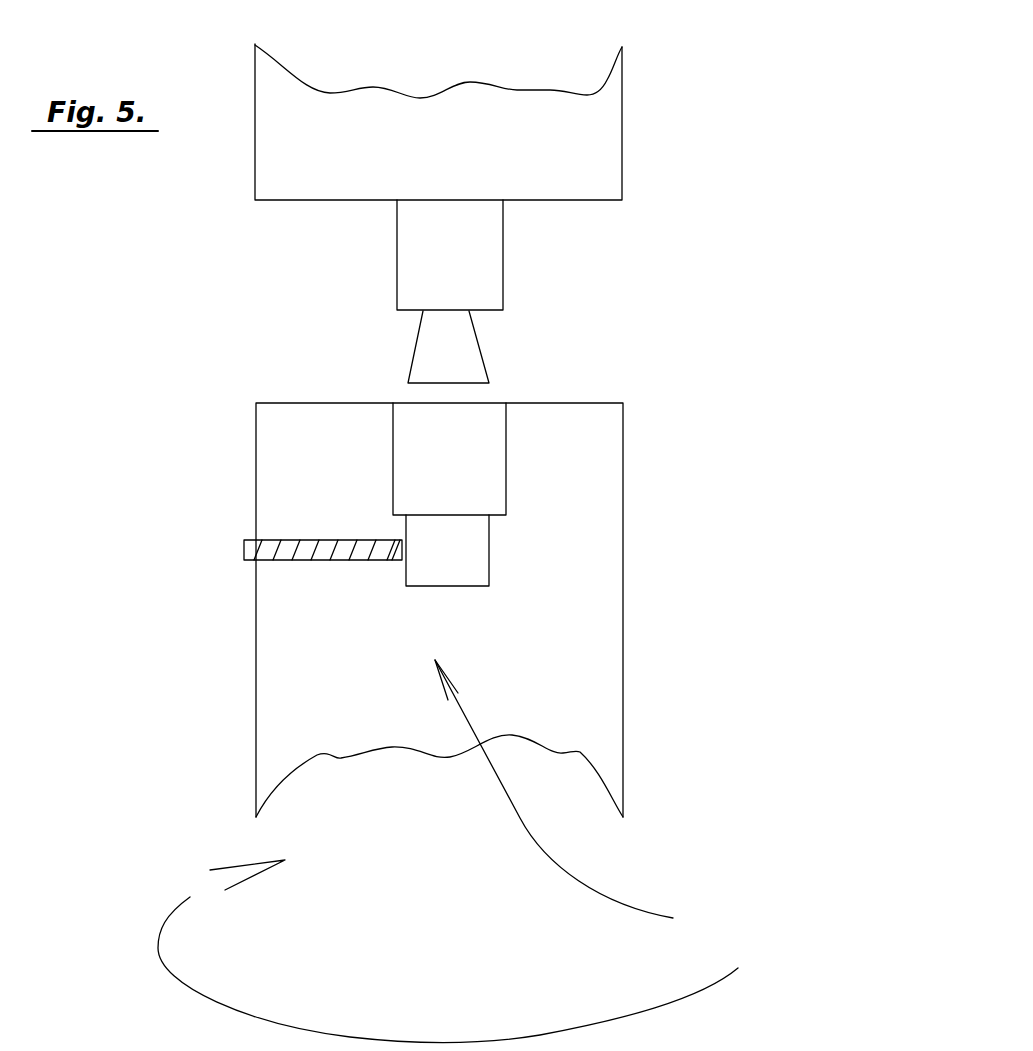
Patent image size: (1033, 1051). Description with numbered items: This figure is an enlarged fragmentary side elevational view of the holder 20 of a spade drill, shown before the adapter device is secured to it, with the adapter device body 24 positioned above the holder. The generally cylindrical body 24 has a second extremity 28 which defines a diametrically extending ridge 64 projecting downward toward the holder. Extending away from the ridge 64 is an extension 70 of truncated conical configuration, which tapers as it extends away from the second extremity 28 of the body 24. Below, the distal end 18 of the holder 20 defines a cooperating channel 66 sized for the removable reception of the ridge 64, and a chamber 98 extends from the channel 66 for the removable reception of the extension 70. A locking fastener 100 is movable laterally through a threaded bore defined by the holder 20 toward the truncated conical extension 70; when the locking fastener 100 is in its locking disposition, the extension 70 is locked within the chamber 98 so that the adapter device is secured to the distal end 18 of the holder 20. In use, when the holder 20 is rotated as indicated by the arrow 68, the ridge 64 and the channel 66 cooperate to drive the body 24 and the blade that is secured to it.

The distal end 18 is at (567, 403).
The holder 20 is at (574, 799).
The body 24 is at (392, 130).
The second extremity 28 is at (560, 155).
The ridge 64 is at (460, 258).
The channel 66 is at (505, 467).
The arrow 68 is at (270, 1023).
The extension 70 is at (442, 363).
The chamber 98 is at (477, 587).
The locking fastener 100 is at (322, 548).